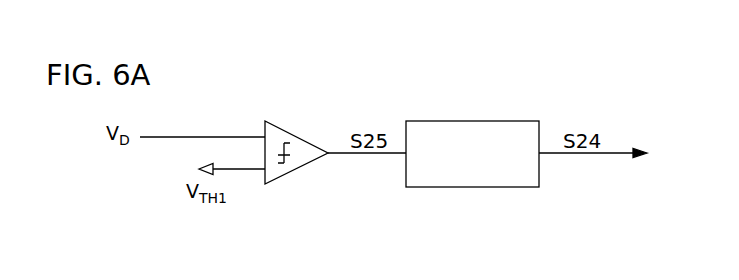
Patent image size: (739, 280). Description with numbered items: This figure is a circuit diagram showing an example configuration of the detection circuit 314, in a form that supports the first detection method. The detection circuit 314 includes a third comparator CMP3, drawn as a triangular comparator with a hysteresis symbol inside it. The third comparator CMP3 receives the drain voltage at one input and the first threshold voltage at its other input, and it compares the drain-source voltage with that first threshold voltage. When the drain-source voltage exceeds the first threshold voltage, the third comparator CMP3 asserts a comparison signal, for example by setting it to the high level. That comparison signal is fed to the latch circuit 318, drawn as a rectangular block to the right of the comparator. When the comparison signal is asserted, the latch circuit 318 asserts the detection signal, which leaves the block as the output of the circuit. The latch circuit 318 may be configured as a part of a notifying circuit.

The latch circuit 318 is at (470, 121).
The detection circuit 314 is at (400, 266).
The third comparator CMP3 is at (293, 176).